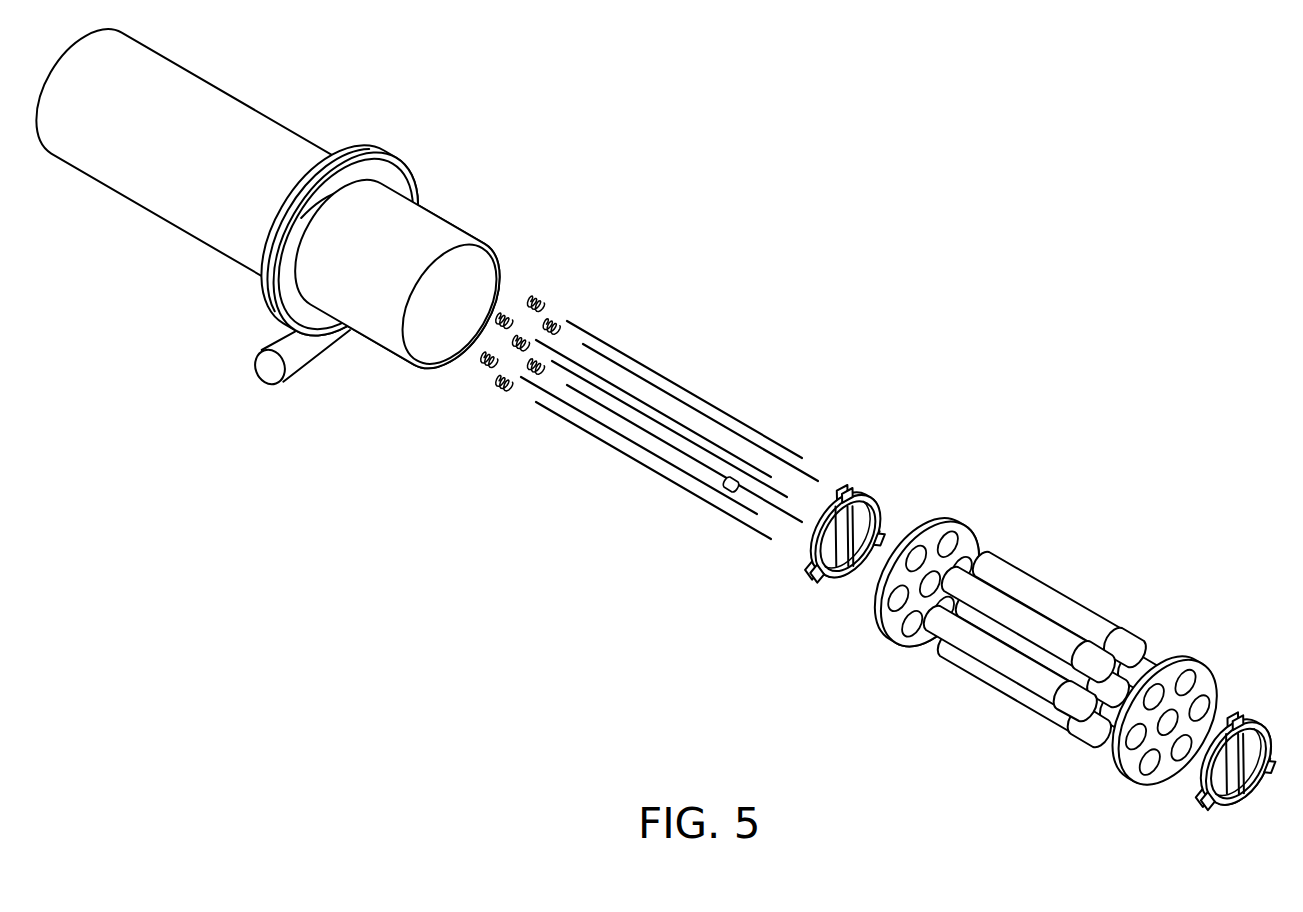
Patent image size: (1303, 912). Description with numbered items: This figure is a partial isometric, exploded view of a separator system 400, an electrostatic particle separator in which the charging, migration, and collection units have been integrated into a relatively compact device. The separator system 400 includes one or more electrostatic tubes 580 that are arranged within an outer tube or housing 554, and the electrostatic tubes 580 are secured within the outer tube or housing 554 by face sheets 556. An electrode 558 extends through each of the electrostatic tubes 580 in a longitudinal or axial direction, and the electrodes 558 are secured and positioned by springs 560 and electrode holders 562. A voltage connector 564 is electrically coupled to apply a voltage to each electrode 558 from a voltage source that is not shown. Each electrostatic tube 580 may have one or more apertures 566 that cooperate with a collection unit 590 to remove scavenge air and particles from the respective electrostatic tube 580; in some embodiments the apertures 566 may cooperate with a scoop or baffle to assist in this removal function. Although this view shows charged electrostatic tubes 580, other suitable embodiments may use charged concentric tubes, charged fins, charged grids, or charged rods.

The separator system 400 is at (662, 422).
The outer tube or housing 554 is at (276, 208).
The collection unit 590 is at (400, 151).
The springs 560 is at (497, 388).
The electrode 558 is at (719, 388).
The voltage connector 564 is at (728, 490).
The electrode holders 562 is at (1046, 627).
The face sheets 556 is at (1049, 634).
The electrostatic tubes 580 is at (1039, 565).
The apertures 566 is at (1113, 623).